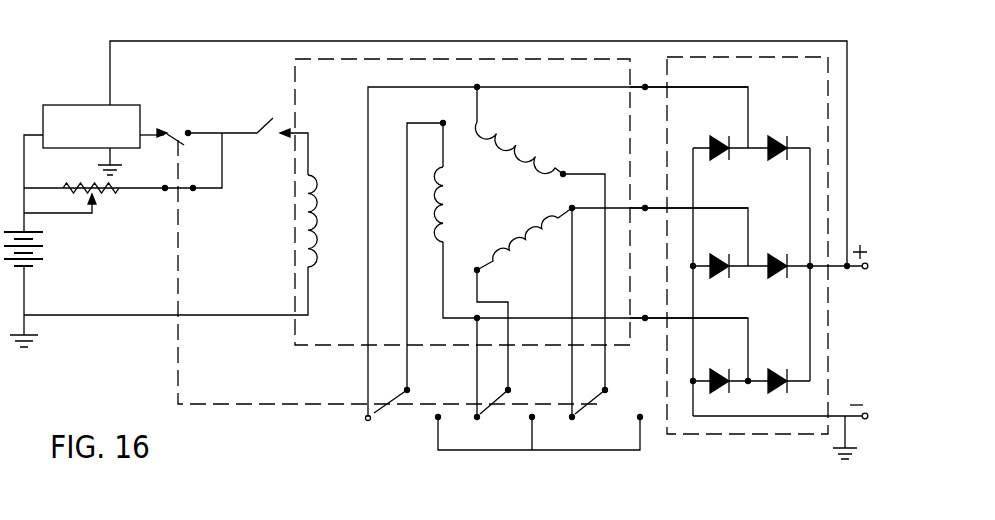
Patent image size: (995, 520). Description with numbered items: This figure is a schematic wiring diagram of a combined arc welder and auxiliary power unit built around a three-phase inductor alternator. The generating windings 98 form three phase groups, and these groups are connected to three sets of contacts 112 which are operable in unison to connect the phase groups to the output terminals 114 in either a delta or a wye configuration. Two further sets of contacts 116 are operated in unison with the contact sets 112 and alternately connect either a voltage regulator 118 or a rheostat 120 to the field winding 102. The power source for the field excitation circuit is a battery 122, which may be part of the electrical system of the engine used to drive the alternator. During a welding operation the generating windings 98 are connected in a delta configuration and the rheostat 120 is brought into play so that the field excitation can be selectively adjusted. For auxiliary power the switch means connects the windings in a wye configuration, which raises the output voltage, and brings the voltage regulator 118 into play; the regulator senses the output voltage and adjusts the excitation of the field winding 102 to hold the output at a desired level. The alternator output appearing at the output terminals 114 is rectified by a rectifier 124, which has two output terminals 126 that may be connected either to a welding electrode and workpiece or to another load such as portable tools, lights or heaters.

The generating windings 98 is at (512, 138).
The field winding 102 is at (316, 213).
The sets of contacts 112 is at (388, 415).
The output terminals 114 is at (645, 85).
The sets of contacts 116 is at (169, 132).
The voltage regulator 118 is at (125, 104).
The rheostat 120 is at (107, 195).
The battery 122 is at (32, 260).
The rectifier 124 is at (708, 57).
The output terminals 126 is at (866, 270).